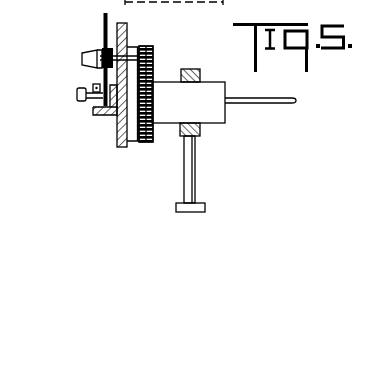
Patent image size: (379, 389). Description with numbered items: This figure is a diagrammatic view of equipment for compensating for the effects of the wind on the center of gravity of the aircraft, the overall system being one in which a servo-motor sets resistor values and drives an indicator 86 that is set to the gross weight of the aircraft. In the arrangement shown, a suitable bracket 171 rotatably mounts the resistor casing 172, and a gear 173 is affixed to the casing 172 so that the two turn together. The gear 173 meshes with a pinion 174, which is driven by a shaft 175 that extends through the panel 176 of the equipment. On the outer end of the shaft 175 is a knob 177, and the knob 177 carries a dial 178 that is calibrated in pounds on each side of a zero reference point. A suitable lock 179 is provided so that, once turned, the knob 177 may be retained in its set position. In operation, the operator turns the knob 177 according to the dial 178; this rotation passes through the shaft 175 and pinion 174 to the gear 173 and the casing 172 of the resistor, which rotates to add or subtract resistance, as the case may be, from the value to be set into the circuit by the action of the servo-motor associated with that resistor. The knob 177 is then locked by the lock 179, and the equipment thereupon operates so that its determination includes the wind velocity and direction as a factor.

The indicator 86 is at (87, 4).
The bracket 171 is at (195, 177).
The resistor casing 172 is at (213, 117).
The gear 173 is at (147, 141).
The pinion 174 is at (154, 48).
The shaft 175 is at (130, 50).
The panel 176 is at (117, 142).
The knob 177 is at (82, 60).
The dial 178 is at (104, 30).
The lock 179 is at (94, 113).